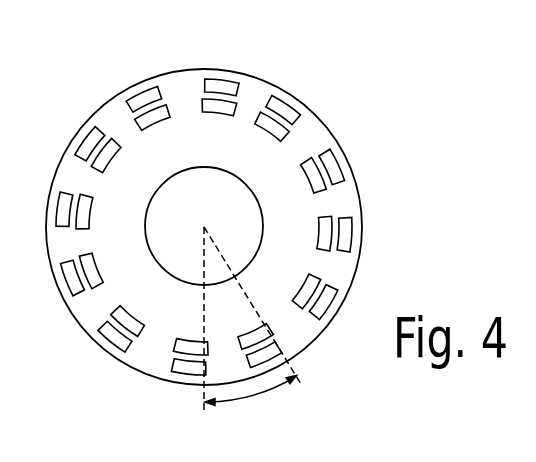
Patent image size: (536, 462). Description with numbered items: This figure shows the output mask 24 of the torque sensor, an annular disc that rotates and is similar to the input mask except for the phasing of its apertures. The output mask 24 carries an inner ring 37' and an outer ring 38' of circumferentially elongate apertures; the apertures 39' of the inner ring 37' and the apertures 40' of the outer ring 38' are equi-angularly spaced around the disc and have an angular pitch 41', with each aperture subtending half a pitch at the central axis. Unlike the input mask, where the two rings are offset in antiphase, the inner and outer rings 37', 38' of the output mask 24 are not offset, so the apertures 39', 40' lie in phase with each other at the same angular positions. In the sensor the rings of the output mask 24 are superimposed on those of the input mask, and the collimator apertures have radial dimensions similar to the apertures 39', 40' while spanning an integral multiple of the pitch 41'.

The output mask 24 is at (120, 285).
The inner ring 37' is at (158, 68).
The outer ring 38' is at (252, 63).
The apertures of the inner ring 39' is at (374, 229).
The apertures of the outer ring 40' is at (320, 90).
The angular pitch 41' is at (271, 335).